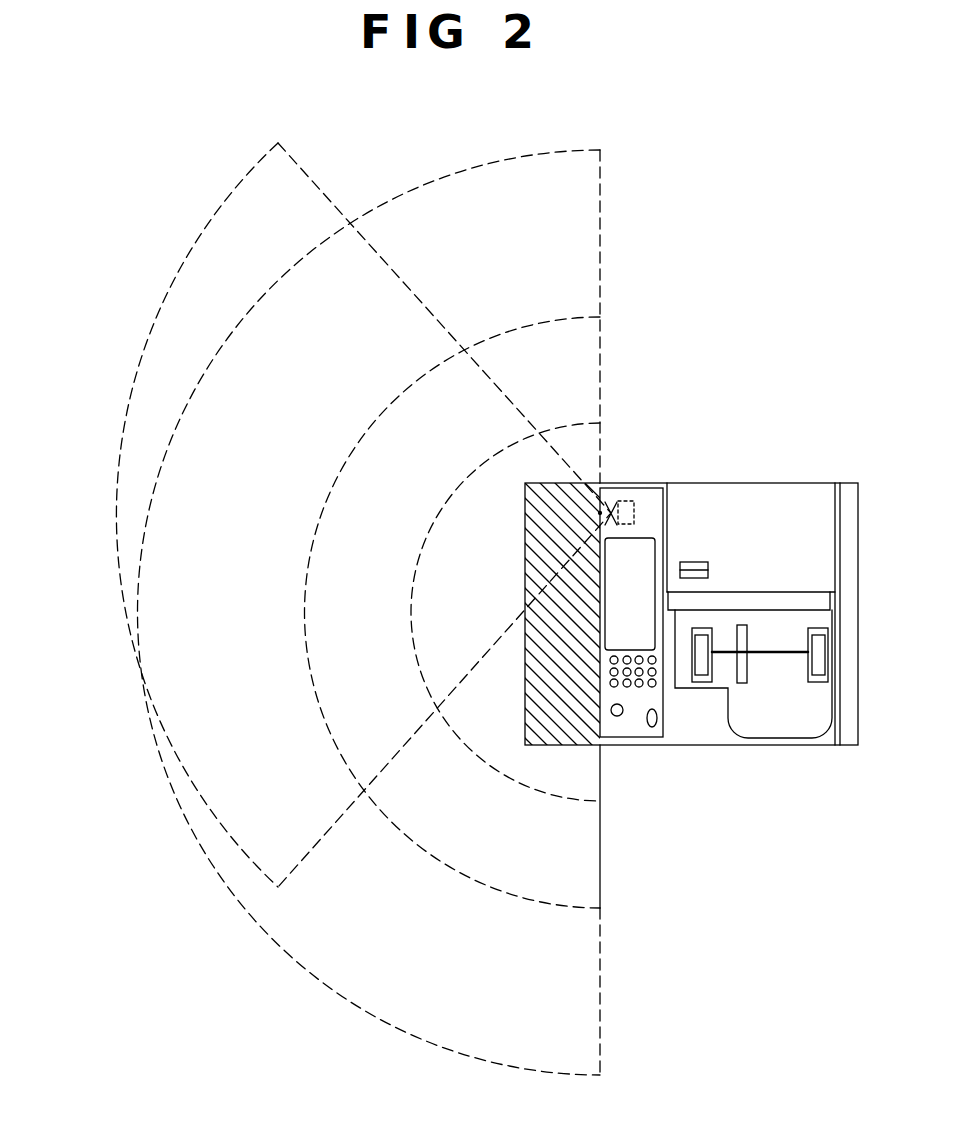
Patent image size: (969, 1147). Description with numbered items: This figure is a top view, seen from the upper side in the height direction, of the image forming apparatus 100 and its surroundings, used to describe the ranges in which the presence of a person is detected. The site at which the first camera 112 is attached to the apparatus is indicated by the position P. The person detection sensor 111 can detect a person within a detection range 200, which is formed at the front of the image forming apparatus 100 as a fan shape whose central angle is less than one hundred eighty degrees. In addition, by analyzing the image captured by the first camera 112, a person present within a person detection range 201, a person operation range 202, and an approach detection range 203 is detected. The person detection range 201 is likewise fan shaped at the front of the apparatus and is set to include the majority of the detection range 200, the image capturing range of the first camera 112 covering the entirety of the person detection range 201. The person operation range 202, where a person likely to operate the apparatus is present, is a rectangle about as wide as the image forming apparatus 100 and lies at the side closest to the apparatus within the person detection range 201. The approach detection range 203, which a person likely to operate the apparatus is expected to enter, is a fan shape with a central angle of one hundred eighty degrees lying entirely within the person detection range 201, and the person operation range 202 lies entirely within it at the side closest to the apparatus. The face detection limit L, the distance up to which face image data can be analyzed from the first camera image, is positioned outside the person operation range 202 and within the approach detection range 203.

The image forming apparatus 100 is at (797, 468).
The person detection sensor 111 is at (650, 487).
The first camera 112 is at (605, 512).
The detection range 200 is at (115, 502).
The person detection range 201 is at (262, 928).
The person operation range 202 is at (525, 577).
The approach detection range 203 is at (423, 857).
The position P is at (600, 505).
The face detection limit L is at (508, 773).